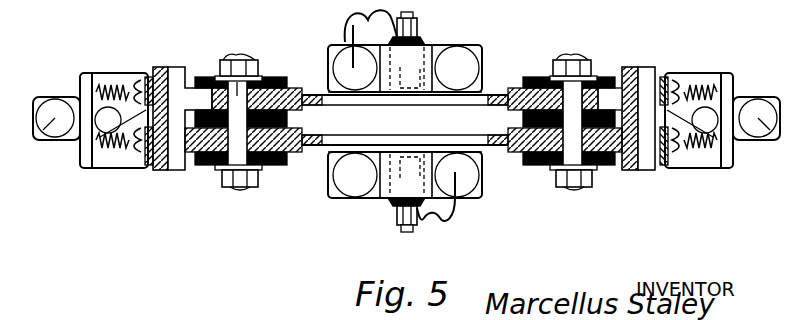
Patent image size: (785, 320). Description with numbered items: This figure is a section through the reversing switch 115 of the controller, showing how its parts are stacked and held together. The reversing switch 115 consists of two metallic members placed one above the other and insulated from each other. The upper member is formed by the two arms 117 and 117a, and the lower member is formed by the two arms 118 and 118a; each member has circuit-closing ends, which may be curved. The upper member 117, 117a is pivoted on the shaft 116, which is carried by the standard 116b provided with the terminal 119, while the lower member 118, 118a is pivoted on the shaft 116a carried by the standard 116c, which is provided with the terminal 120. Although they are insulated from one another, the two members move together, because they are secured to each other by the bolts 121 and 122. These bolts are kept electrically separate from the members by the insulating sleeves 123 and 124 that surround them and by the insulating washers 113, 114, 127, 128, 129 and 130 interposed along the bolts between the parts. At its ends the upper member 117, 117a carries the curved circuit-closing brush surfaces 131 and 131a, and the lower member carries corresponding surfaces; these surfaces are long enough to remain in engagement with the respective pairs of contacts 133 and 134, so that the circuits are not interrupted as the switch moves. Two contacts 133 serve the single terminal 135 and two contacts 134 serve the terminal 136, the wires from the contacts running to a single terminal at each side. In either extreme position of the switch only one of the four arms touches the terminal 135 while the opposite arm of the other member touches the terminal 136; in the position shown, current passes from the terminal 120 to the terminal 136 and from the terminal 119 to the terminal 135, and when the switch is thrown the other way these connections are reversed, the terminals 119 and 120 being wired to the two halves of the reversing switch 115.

The insulating washer 113 is at (399, 120).
The insulating washer 114 is at (530, 118).
The reversing switch 115 is at (405, 122).
The shaft 116 is at (399, 226).
The shaft 116a is at (413, 21).
The standard 116b is at (410, 178).
The standard 116c is at (412, 80).
The arm 117 is at (576, 184).
The arm 117a is at (180, 152).
The arm 118 is at (480, 120).
The arm 118a is at (320, 101).
The terminal 119 is at (467, 180).
The terminal 120 is at (347, 62).
The bolt 121 is at (242, 60).
The bolt 122 is at (569, 85).
The insulating sleeve 123 is at (232, 60).
The insulating sleeve 124 is at (580, 61).
The insulating washer 127 is at (282, 164).
The insulating washer 128 is at (524, 158).
The insulating washer 129 is at (292, 72).
The insulating washer 130 is at (526, 81).
The curved circuit-closing brush surface 131 is at (629, 68).
The curved circuit-closing brush surface 131a is at (167, 66).
The contact 133 is at (114, 166).
The contact 134 is at (660, 162).
The terminal 135 is at (44, 141).
The terminal 136 is at (745, 134).